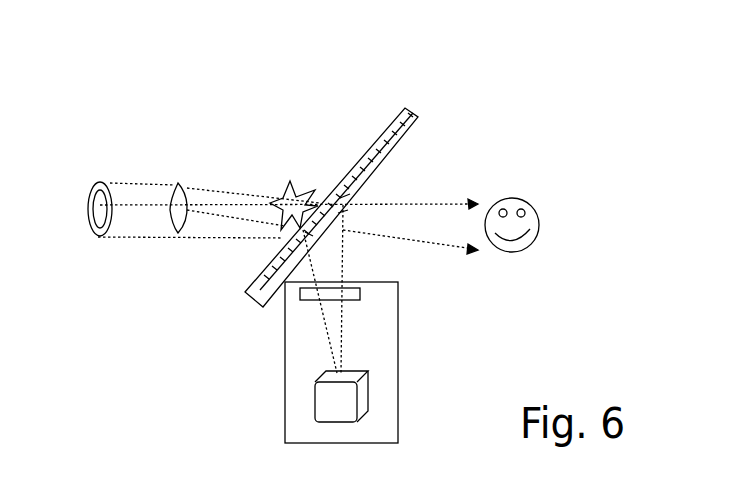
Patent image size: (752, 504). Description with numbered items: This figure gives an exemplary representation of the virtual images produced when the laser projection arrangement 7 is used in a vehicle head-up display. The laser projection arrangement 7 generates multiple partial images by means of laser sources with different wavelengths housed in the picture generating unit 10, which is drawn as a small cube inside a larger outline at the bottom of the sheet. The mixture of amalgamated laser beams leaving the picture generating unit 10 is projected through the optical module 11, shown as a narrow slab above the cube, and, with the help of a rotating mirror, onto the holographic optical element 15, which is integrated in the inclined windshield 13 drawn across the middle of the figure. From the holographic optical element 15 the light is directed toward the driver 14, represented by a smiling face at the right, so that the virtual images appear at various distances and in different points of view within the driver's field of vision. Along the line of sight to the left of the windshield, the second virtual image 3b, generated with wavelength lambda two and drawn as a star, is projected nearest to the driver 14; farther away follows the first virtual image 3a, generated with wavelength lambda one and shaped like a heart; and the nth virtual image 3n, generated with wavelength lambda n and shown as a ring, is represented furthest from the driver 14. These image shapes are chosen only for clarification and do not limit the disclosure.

The laser projection arrangement 7 is at (240, 138).
The nth virtual image 3n is at (93, 233).
The first virtual image 3a is at (175, 232).
The second virtual image 3b is at (262, 212).
The windshield 13 is at (363, 152).
The holographic optical element 15 is at (353, 190).
The driver 14 is at (530, 229).
The optical module 11 is at (360, 293).
The picture generating unit 10 is at (372, 382).